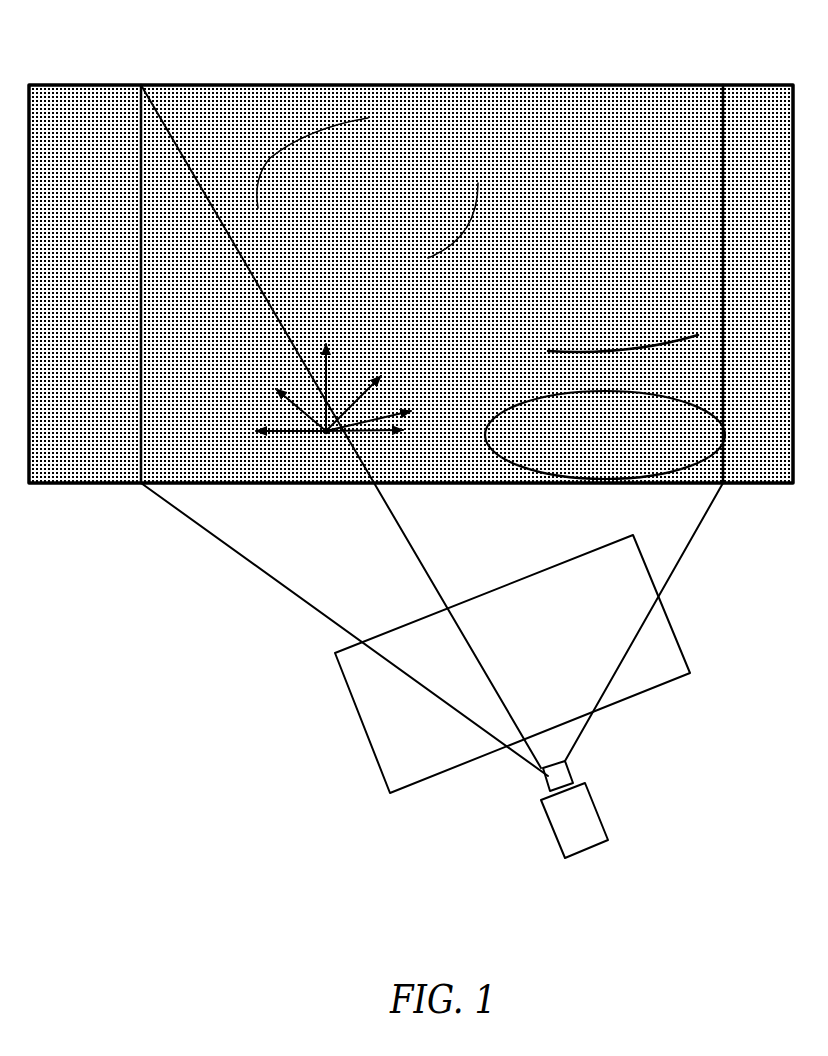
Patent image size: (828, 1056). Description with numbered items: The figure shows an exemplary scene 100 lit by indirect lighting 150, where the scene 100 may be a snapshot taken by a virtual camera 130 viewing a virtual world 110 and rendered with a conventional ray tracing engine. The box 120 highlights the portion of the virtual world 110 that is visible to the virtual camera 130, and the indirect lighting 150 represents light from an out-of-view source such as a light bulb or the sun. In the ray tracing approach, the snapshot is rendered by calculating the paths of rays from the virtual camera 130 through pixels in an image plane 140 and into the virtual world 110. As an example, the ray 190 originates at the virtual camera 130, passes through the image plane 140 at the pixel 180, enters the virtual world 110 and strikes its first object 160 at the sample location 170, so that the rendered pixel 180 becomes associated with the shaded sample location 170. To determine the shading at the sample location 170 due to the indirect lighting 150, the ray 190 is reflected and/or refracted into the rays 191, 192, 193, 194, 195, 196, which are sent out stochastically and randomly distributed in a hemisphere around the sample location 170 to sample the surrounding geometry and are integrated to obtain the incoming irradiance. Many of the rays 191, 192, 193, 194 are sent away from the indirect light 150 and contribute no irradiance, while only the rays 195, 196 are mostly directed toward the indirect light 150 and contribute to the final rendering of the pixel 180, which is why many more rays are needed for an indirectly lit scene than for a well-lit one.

The scene 100 is at (638, 54).
The virtual world 110 is at (66, 76).
The box 120 is at (325, 77).
The virtual camera 130 is at (538, 810).
The image plane 140 is at (368, 760).
The indirect lighting 150 is at (577, 478).
The object 160 is at (243, 150).
The sample location 170 is at (318, 426).
The pixel 180 is at (510, 720).
The ray 190 is at (412, 563).
The ray 191 is at (252, 427).
The ray 192 is at (265, 388).
The ray 193 is at (320, 338).
The ray 194 is at (372, 368).
The ray 195 is at (408, 408).
The ray 196 is at (398, 428).